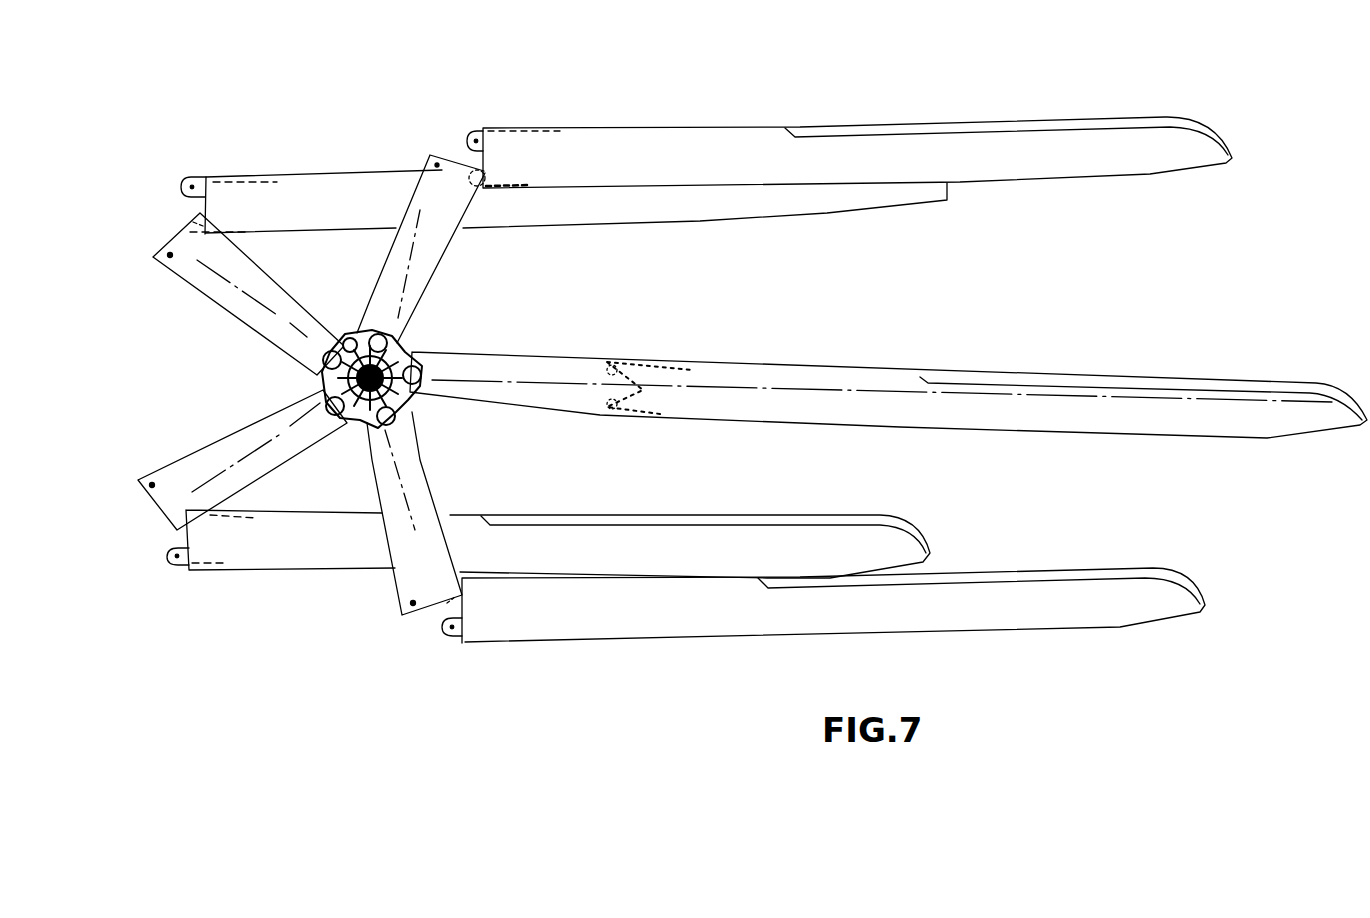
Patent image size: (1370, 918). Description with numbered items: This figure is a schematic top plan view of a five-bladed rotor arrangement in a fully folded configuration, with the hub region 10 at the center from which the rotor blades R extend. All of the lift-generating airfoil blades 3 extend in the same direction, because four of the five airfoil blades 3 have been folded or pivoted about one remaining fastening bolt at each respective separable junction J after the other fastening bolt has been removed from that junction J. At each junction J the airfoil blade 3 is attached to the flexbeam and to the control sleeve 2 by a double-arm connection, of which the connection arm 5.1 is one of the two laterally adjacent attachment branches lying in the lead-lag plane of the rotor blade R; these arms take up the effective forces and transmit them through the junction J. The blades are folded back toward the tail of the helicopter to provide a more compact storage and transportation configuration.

The control sleeve 2 is at (557, 400).
The airfoil blade 3 is at (776, 392).
The connection arm 5.1 is at (451, 638).
The rotor hub 10 is at (400, 347).
The junction J is at (454, 127).
The rotor blade R is at (350, 124).